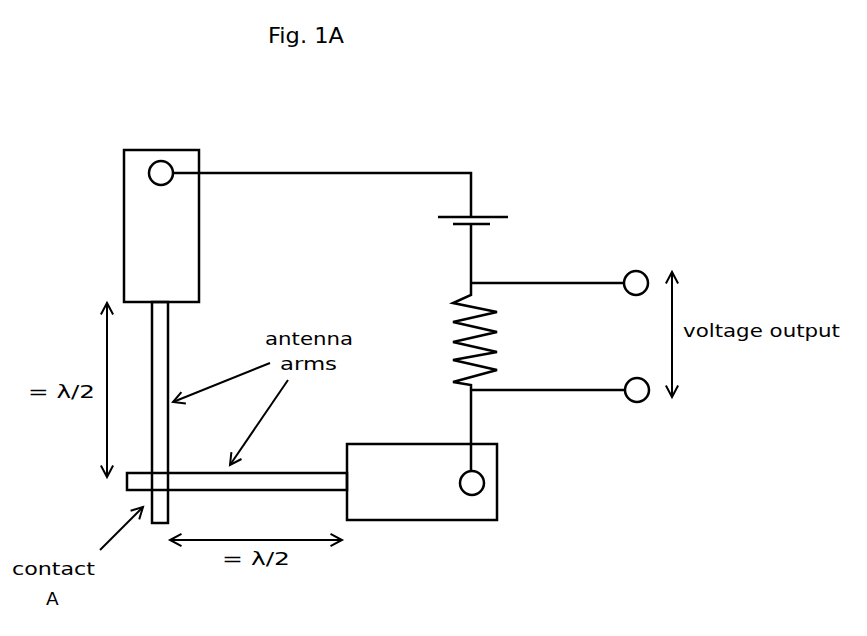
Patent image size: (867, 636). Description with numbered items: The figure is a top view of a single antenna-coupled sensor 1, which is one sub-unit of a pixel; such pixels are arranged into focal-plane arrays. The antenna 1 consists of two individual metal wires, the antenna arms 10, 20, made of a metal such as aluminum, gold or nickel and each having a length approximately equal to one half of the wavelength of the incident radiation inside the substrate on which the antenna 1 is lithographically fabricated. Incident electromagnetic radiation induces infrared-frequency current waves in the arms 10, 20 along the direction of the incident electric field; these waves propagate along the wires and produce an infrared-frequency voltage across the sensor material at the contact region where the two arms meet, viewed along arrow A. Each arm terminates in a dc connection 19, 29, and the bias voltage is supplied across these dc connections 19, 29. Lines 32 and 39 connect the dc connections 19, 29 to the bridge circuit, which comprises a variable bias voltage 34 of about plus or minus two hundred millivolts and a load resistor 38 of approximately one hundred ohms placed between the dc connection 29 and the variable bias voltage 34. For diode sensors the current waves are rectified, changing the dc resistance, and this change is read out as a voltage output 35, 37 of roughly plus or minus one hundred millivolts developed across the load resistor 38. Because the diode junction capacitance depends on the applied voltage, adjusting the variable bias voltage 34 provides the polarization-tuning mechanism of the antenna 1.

The antenna-coupled sensor 1 is at (125, 93).
The antenna arm 10 is at (168, 340).
The dc connection 19 is at (199, 268).
The antenna arm 20 is at (293, 472).
The dc connection 29 is at (417, 520).
The line 32 is at (420, 171).
The variable bias voltage 34 is at (448, 233).
The voltage output 35 is at (680, 282).
The voltage output 37 is at (640, 400).
The load resistor 38 is at (487, 352).
The line 39 is at (472, 413).